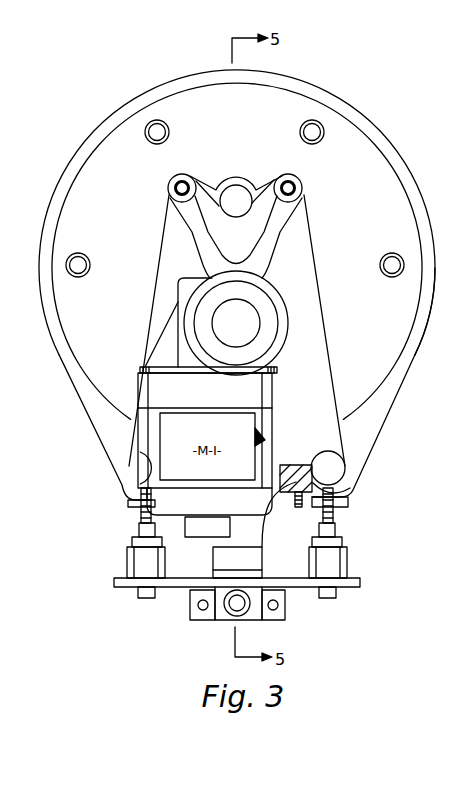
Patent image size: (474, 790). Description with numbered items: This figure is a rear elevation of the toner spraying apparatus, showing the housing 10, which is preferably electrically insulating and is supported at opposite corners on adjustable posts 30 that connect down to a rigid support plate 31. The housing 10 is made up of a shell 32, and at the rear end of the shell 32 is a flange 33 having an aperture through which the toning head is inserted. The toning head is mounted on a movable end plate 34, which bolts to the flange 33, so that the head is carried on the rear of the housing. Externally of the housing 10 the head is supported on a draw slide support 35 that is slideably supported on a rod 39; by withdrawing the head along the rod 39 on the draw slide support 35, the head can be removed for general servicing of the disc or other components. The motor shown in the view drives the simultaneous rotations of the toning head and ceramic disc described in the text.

The housing 10 is at (20, 231).
The adjustable post 30 is at (337, 567).
The support plate 31 is at (358, 583).
The shell 32 is at (106, 119).
The flange 33 is at (430, 316).
The end plate 34 is at (402, 217).
The draw slide support 35 is at (247, 615).
The rod 39 is at (233, 606).